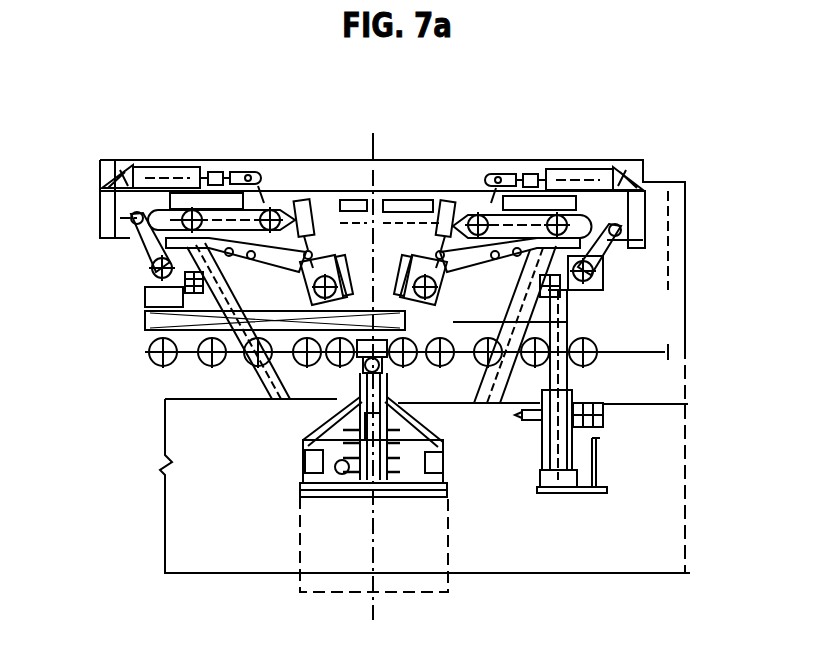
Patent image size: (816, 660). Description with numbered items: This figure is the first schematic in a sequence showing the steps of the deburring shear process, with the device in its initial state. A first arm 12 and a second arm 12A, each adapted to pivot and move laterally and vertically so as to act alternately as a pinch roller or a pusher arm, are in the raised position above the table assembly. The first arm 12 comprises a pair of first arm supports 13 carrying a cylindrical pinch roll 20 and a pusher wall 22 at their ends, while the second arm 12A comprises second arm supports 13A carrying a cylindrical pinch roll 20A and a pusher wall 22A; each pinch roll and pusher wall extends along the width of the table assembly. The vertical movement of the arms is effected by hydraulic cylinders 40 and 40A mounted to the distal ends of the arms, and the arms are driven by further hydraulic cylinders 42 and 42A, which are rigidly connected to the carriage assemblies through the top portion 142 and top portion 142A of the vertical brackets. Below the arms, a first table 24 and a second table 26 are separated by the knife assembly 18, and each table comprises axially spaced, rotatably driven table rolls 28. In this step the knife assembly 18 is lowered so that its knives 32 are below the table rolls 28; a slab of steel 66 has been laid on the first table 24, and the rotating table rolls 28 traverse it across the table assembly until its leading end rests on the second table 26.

The first arm 12 is at (292, 238).
The second arm 12A is at (447, 240).
The first arm supports 13 is at (147, 284).
The second arm supports 13A is at (605, 297).
The knife assembly 18 is at (278, 490).
The cylindrical pinch roll 20 is at (145, 316).
The cylindrical pinch roll 20A is at (583, 318).
The pusher wall 22 is at (346, 278).
The pusher wall 22A is at (402, 272).
The first table 24 is at (204, 385).
The second table 26 is at (577, 427).
The table rolls 28 is at (147, 352).
The knives 32 is at (443, 410).
The hydraulic cylinders 40 is at (316, 240).
The hydraulic cylinders 40A is at (437, 203).
The hydraulic cylinders 42 is at (153, 158).
The hydraulic cylinders 42A is at (580, 171).
The slab of steel 66 is at (147, 328).
The top portion 142 is at (262, 160).
The top portion 142A is at (477, 216).